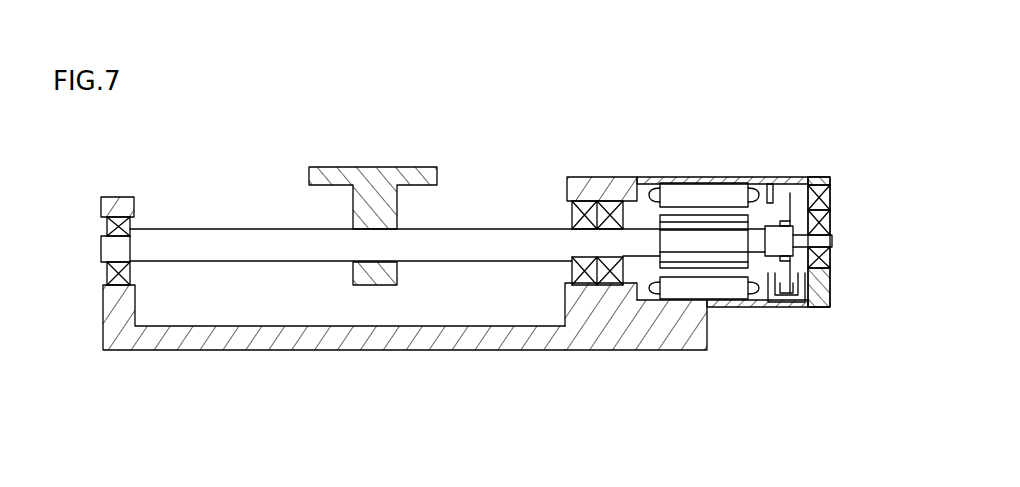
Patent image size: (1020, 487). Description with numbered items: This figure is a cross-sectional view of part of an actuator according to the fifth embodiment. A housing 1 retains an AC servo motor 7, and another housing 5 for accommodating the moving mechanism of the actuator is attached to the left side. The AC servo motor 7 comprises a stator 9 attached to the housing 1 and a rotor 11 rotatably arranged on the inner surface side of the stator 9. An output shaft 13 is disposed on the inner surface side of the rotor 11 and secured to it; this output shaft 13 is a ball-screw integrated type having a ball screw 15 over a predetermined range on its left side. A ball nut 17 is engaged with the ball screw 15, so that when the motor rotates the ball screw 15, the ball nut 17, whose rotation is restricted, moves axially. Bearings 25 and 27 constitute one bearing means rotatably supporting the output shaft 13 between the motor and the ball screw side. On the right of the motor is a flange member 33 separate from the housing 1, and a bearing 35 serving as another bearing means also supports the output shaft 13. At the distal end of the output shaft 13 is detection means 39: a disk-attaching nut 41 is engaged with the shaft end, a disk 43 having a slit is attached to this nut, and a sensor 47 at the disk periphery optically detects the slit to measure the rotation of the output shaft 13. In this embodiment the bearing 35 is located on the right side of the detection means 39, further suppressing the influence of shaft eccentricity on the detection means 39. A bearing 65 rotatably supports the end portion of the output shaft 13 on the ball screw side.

The housing 1 is at (688, 344).
The housing 5 is at (303, 349).
The AC servo motor 7 is at (762, 177).
The stator 9 is at (713, 188).
The rotor 11 is at (677, 215).
The output shaft 13 is at (640, 245).
The ball screw 15 is at (233, 229).
The ball nut 17 is at (397, 214).
The bearing 25 is at (566, 300).
The bearing 27 is at (608, 283).
The flange member 33 is at (830, 283).
The bearing 35 is at (812, 200).
The detection means 39 is at (804, 186).
The disk-attaching nut 41 is at (831, 245).
The disk 43 is at (830, 177).
The sensor 47 is at (790, 303).
The bearing 65 is at (107, 283).